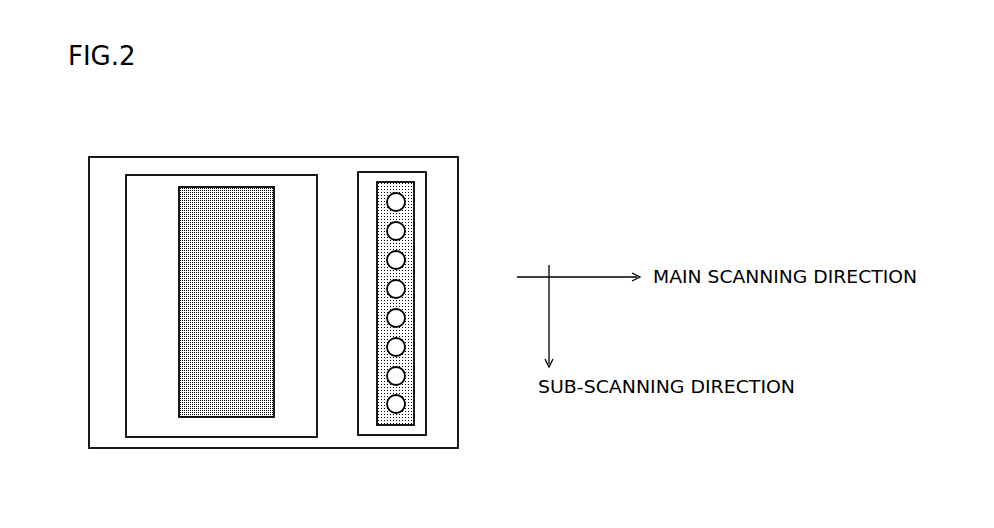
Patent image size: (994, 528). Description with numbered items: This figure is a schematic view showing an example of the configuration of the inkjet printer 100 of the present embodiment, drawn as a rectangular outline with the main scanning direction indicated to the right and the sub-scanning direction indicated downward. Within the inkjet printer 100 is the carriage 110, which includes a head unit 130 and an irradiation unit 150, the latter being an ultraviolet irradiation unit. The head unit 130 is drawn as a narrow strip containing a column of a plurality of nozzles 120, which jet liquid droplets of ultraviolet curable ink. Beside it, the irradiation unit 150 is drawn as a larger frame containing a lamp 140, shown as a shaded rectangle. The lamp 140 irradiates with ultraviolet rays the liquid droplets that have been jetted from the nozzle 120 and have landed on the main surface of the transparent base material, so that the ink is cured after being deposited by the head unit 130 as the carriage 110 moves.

The inkjet printer 100 is at (462, 490).
The carriage 110 is at (431, 167).
The nozzle 120 is at (396, 231).
The head unit 130 is at (415, 181).
The lamp 140 is at (178, 250).
The irradiation unit 150 is at (145, 205).